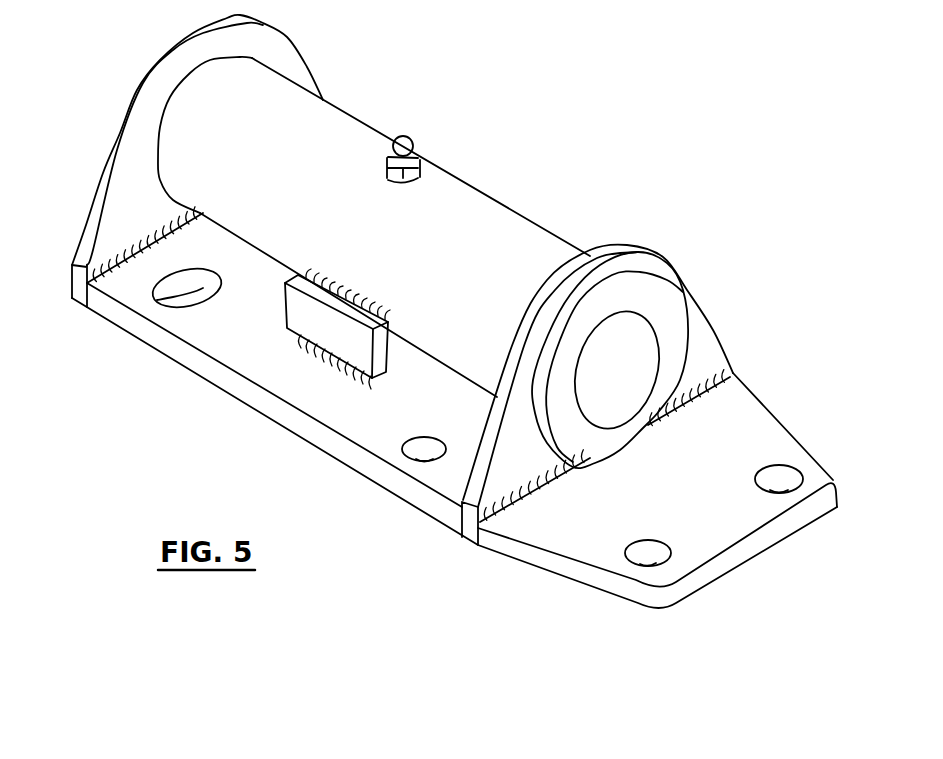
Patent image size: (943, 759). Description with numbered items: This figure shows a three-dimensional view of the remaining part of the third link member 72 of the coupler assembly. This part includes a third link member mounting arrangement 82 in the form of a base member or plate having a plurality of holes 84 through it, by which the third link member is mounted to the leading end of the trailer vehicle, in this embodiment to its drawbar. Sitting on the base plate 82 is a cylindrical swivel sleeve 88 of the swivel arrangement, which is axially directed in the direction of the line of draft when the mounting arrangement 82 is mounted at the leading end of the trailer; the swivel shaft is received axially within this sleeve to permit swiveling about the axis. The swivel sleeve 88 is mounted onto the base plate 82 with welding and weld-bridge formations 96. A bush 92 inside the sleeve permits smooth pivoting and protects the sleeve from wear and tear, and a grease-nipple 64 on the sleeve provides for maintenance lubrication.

The grease-nipple 64 is at (407, 145).
The third link member remaining part 72 is at (573, 170).
The third link member mounting arrangement 82 is at (757, 413).
The holes 84 is at (417, 450).
The cylindrical swivel sleeve 88 is at (328, 118).
The bush 92 is at (667, 275).
The weld-bridge formation 96 is at (378, 358).